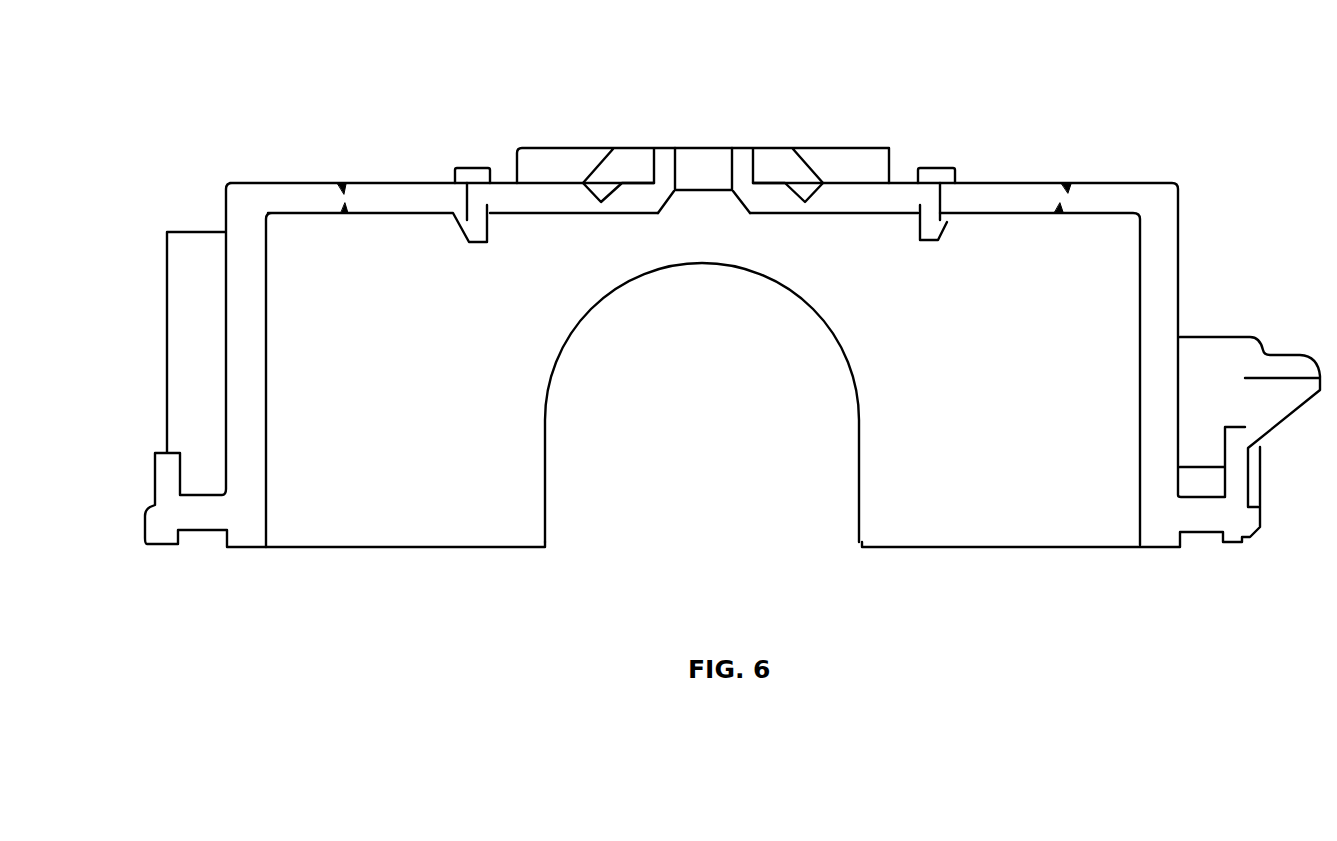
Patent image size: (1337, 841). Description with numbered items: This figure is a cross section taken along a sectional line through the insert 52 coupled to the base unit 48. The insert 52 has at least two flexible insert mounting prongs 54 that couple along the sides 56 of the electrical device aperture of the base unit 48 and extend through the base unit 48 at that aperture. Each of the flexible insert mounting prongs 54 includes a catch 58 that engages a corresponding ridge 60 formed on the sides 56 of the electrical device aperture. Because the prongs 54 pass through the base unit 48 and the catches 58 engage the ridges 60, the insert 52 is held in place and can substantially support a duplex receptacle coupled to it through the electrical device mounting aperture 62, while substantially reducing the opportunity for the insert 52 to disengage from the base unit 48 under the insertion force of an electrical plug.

The base unit 48 is at (268, 190).
The insert 52 is at (885, 190).
The flexible insert mounting prongs 54 is at (919, 205).
The sides 56 is at (457, 179).
The catches 58 is at (947, 226).
The ridges 60 is at (947, 221).
The electrical device mounting aperture 62 is at (695, 165).